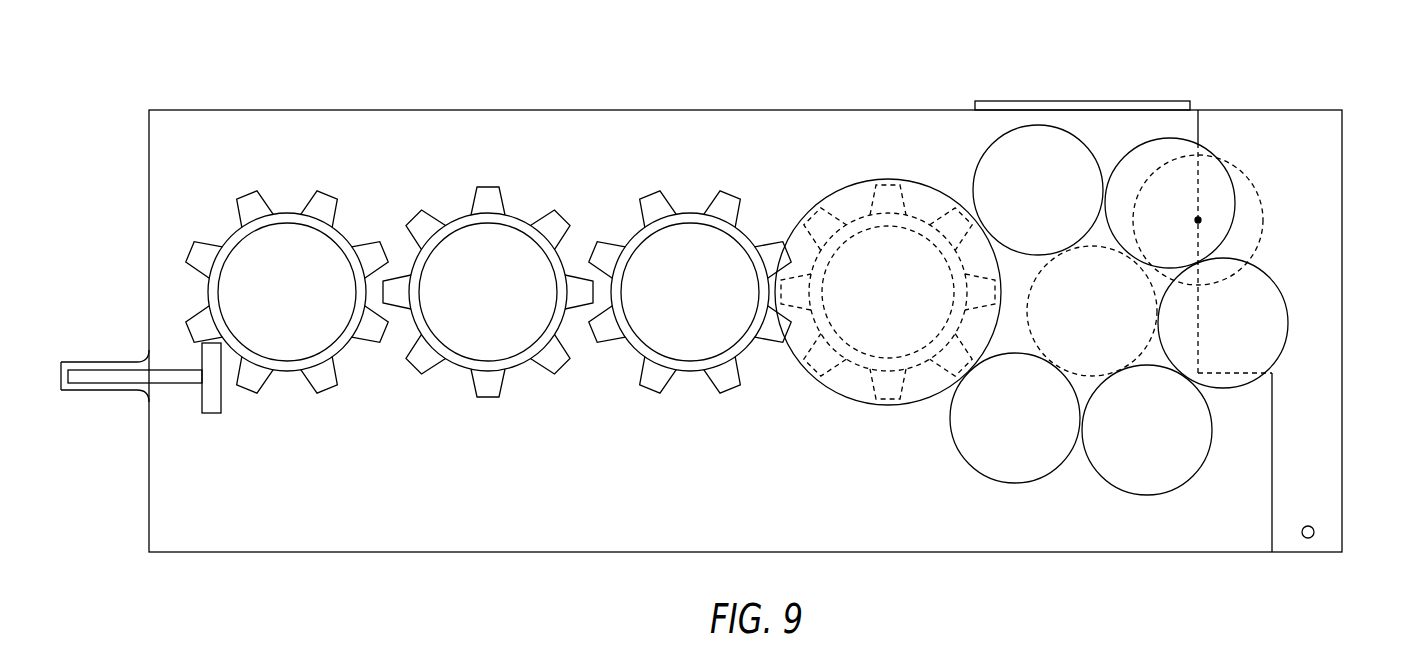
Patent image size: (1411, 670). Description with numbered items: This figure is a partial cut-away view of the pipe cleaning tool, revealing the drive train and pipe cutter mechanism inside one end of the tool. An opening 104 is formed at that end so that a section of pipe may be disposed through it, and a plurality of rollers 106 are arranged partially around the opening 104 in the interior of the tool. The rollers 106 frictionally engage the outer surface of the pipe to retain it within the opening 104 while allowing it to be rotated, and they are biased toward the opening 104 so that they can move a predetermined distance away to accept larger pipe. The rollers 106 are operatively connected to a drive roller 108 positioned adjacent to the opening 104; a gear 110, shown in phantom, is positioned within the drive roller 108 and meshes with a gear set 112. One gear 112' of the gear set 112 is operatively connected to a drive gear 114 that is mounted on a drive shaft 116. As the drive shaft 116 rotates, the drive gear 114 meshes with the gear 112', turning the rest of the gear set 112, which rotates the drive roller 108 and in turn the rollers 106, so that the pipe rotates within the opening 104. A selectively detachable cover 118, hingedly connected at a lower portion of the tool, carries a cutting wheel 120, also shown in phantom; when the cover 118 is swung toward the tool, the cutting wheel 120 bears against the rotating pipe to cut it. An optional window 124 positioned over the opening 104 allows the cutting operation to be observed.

The opening 104 is at (1078, 410).
The rollers 106 is at (1038, 125).
The drive roller 108 is at (890, 178).
The gear 110 is at (908, 186).
The gear set 112 is at (488, 261).
The gear 112' is at (283, 275).
The drive gear 114 is at (213, 400).
The drive shaft 116 is at (110, 377).
The cover 118 is at (1323, 188).
The cutting wheel 120 is at (1255, 188).
The window 124 is at (1085, 104).